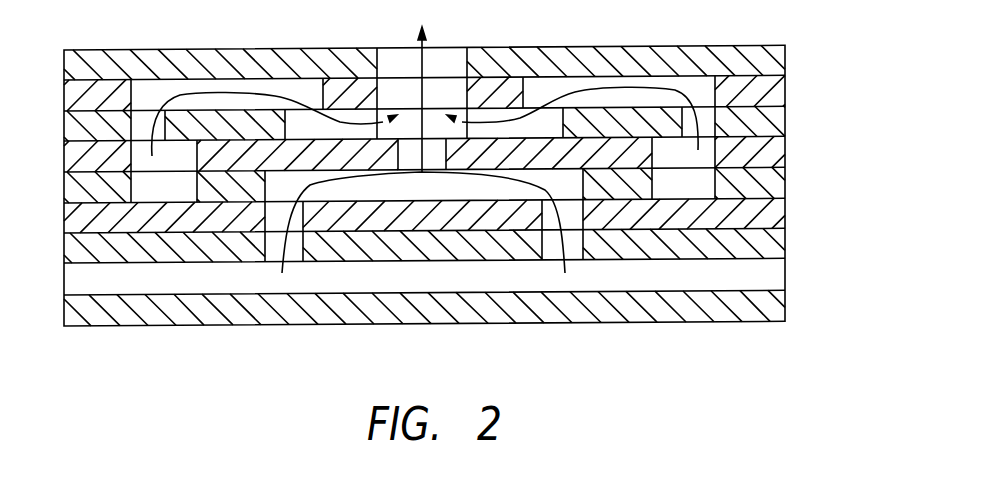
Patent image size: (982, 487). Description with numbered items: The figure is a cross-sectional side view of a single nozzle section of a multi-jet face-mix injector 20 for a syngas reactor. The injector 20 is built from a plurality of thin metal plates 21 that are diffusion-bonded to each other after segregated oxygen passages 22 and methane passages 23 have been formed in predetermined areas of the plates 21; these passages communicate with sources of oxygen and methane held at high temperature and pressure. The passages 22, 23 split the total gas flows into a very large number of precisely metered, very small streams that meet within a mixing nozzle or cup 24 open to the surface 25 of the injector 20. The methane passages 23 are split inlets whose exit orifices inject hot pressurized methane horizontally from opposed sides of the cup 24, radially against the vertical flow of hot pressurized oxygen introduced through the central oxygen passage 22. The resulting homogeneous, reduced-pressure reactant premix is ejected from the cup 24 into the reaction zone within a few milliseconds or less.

The injector 20 is at (767, 46).
The thin metal plates 21 is at (785, 307).
The oxygen passages 22 is at (413, 185).
The methane passages 23 is at (325, 116).
The mixing nozzle or cup 24 is at (432, 60).
The surface 25 is at (500, 48).